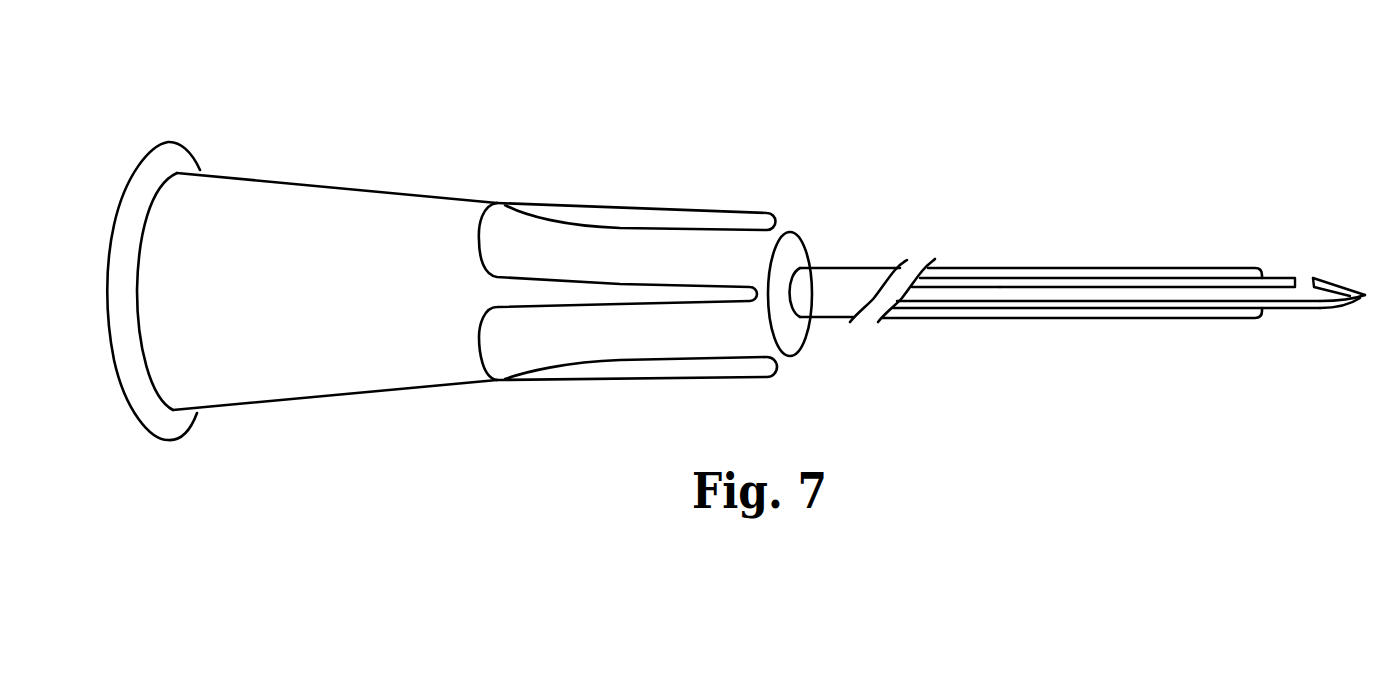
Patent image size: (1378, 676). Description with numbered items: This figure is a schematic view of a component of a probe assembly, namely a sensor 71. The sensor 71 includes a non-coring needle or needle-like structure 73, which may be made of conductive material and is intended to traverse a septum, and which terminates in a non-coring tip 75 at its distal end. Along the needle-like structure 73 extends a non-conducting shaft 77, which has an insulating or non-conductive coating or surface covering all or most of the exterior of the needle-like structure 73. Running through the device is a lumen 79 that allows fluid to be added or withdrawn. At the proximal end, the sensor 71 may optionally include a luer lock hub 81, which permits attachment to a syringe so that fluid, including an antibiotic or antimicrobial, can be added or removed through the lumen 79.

The sensor 71 is at (316, 122).
The non-coring needle-like structure 73 is at (1282, 277).
The non-coring tip 75 is at (1363, 287).
The non-conducting shaft 77 is at (1057, 268).
The lumen 79 is at (952, 283).
The luer lock hub 81 is at (131, 171).